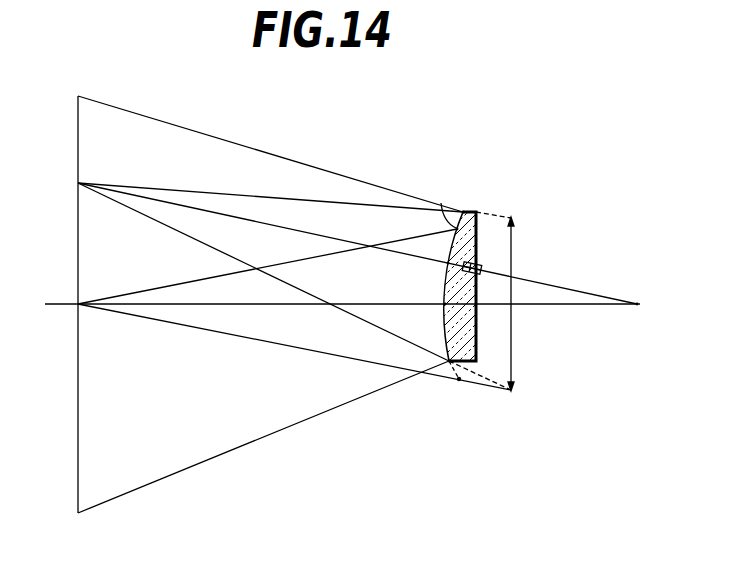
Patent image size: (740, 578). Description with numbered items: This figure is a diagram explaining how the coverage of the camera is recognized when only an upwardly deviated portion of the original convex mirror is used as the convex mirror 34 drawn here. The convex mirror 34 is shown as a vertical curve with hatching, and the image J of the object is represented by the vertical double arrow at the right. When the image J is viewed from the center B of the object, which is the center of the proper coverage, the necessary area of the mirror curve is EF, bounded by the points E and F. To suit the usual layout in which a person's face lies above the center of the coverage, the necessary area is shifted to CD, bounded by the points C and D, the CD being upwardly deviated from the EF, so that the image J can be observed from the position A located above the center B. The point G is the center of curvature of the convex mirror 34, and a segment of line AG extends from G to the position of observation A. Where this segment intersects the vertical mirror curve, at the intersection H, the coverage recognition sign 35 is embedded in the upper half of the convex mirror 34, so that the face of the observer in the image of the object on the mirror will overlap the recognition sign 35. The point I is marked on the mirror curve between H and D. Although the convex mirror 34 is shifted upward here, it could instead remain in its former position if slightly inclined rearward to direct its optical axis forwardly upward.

The convex mirror 34 is at (473, 322).
The coverage recognition sign 35 is at (481, 266).
The position of observation above center A is at (344, 266).
The center of the object B is at (282, 309).
The upper end of the necessary mirror area C is at (460, 202).
The lower end of the necessary mirror area D is at (439, 344).
The upper end of the original necessary area E is at (443, 204).
The lower end of the original necessary area F is at (448, 384).
The center of curvature of the mirror G is at (635, 292).
The intersection of mirror curve with line A'G H is at (441, 251).
The point on the mirror curve at the axis I is at (440, 292).
The image of the object J is at (481, 290).